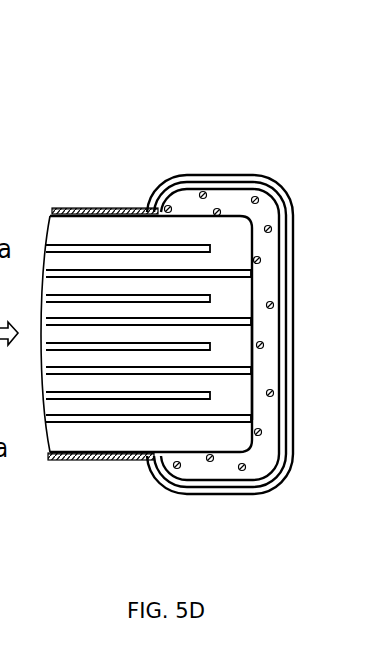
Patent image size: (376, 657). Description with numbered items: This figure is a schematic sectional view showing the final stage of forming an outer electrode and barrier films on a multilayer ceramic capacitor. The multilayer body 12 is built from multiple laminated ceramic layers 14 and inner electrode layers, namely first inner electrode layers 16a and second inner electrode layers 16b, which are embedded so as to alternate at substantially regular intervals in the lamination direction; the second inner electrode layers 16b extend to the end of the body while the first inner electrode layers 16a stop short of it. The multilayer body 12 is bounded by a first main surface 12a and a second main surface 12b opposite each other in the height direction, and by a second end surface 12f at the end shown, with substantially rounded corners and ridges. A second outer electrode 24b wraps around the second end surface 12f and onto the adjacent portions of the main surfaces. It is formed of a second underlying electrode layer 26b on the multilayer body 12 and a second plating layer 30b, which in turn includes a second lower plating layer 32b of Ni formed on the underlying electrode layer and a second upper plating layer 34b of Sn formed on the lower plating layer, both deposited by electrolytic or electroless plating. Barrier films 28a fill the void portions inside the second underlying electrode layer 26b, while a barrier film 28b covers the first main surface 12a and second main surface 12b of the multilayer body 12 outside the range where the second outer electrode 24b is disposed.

The multilayer body 12 is at (121, 201).
The first main surface 12a is at (64, 208).
The second main surface 12b is at (106, 461).
The second end surface 12f is at (251, 358).
The ceramic layers 14 is at (169, 263).
The first inner electrode layers 16a is at (105, 297).
The second inner electrode layers 16b is at (228, 276).
The second outer electrode 24b is at (285, 63).
The second underlying electrode layer 26b is at (185, 203).
The barrier films 28a is at (261, 261).
The barrier film 28b is at (55, 208).
The second plating layer 30b is at (307, 115).
The second lower plating layer 32b is at (220, 187).
The second upper plating layer 34b is at (267, 181).